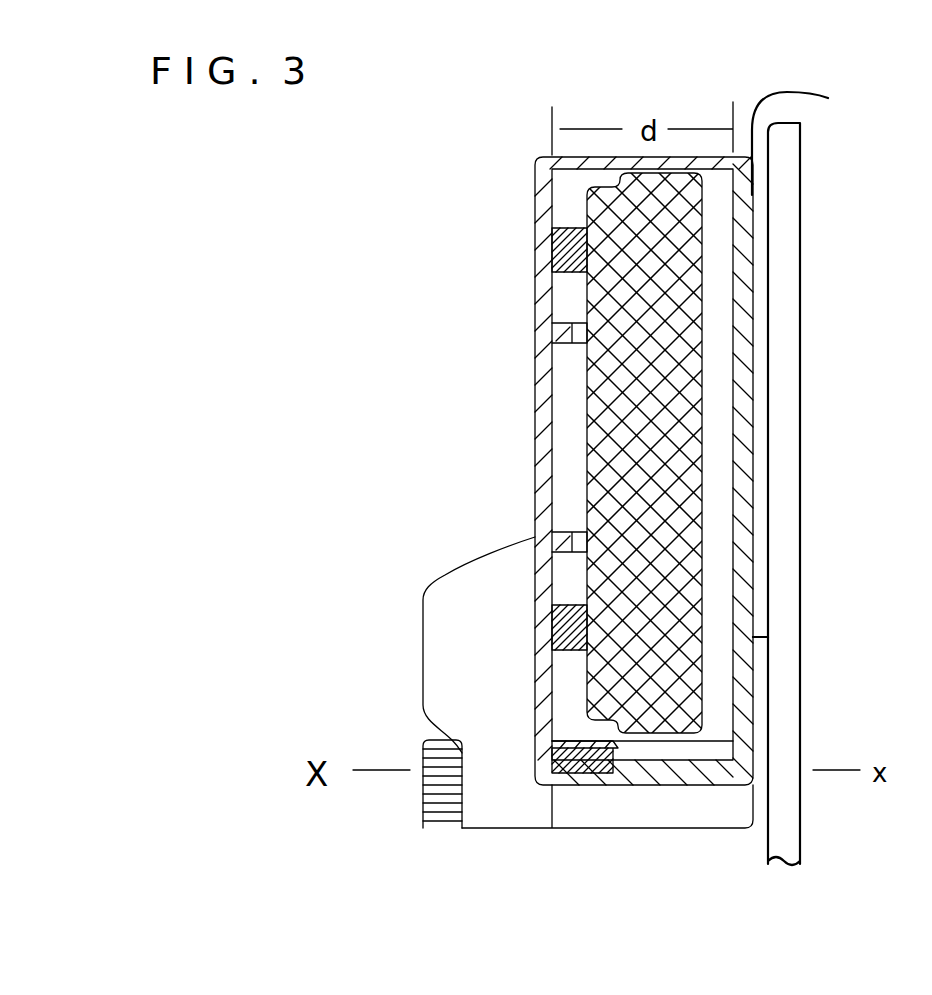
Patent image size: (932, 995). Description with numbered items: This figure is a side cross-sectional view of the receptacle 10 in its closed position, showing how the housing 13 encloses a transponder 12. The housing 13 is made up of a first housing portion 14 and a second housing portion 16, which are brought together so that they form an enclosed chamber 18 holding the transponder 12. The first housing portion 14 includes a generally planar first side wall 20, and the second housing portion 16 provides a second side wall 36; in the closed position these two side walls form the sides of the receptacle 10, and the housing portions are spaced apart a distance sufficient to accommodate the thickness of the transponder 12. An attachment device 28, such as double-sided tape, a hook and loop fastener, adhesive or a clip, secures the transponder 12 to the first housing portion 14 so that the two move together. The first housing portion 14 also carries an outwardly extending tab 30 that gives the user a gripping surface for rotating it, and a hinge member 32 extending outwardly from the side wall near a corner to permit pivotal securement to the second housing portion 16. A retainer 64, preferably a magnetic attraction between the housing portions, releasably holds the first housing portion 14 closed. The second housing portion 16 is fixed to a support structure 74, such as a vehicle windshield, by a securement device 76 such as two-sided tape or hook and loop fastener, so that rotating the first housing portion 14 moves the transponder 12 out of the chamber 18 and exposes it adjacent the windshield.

The receptacle 10 is at (436, 250).
The transponder 12 is at (598, 432).
The housing 13 is at (545, 185).
The first housing portion 14 is at (545, 488).
The second housing portion 16 is at (814, 478).
The enclosed chamber 18 is at (720, 272).
The first side wall 20 is at (650, 465).
The attachment device 28 is at (555, 243).
The outwardly extending tab 30 is at (435, 660).
The hinge member 32 is at (495, 817).
The second side wall 36 is at (743, 390).
The retainer 64 is at (577, 772).
The support structure 74 is at (801, 320).
The securement device 76 is at (757, 613).